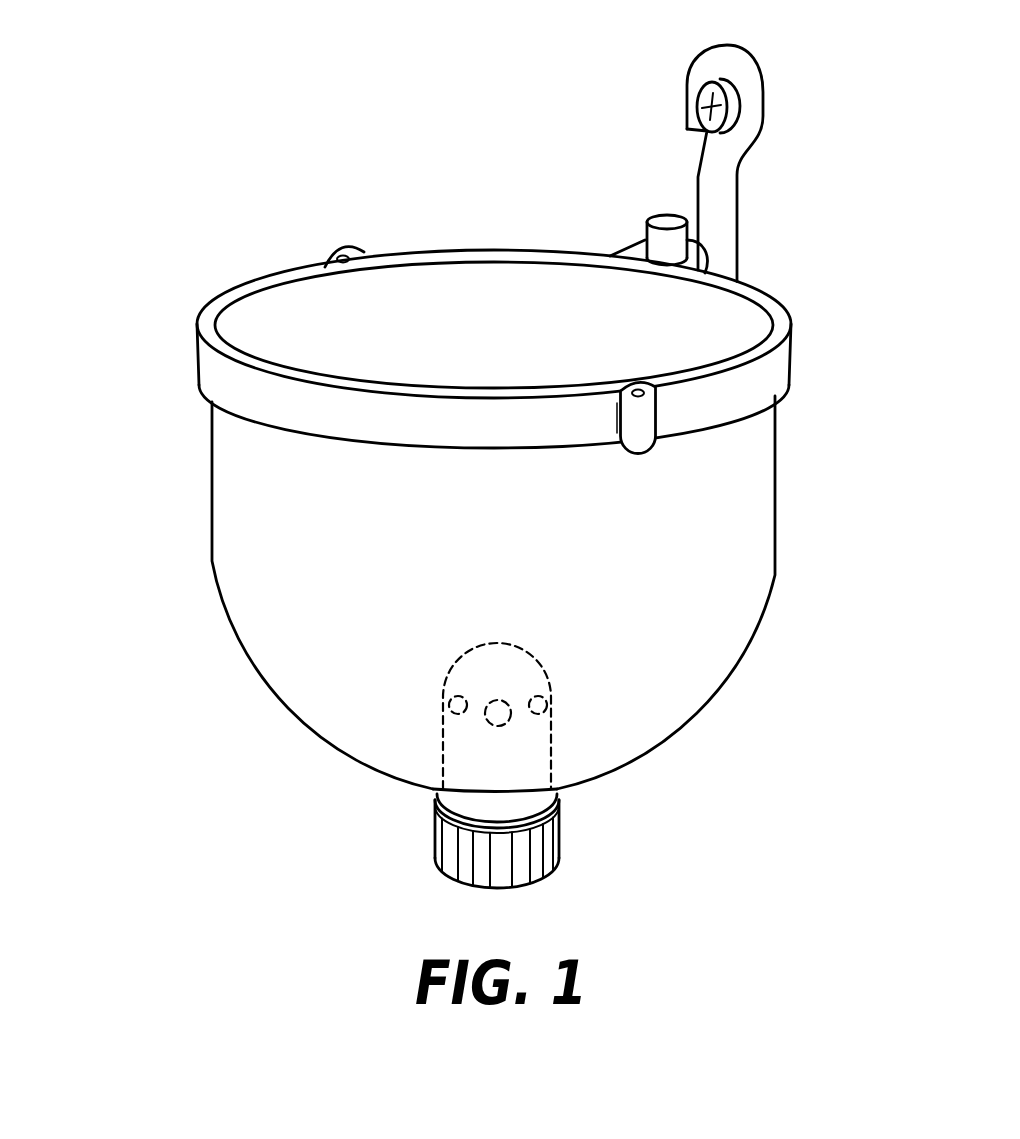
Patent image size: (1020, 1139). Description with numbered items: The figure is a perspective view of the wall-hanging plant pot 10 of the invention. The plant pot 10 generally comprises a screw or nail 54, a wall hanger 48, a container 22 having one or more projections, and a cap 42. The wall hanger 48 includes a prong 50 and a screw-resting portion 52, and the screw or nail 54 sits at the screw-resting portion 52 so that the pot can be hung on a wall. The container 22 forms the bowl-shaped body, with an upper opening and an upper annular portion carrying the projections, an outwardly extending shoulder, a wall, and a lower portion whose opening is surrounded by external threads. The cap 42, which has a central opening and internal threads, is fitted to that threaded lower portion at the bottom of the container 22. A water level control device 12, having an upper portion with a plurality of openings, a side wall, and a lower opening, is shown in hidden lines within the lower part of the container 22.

The wall-hanging plant pot 10 is at (136, 272).
The water level control device 12 is at (571, 751).
The container 22 is at (827, 529).
The cap 42 is at (574, 850).
The wall hanger 48 is at (795, 124).
The prong 50 is at (660, 220).
The screw-resting portion 52 is at (722, 58).
The screw or nail 54 is at (699, 100).